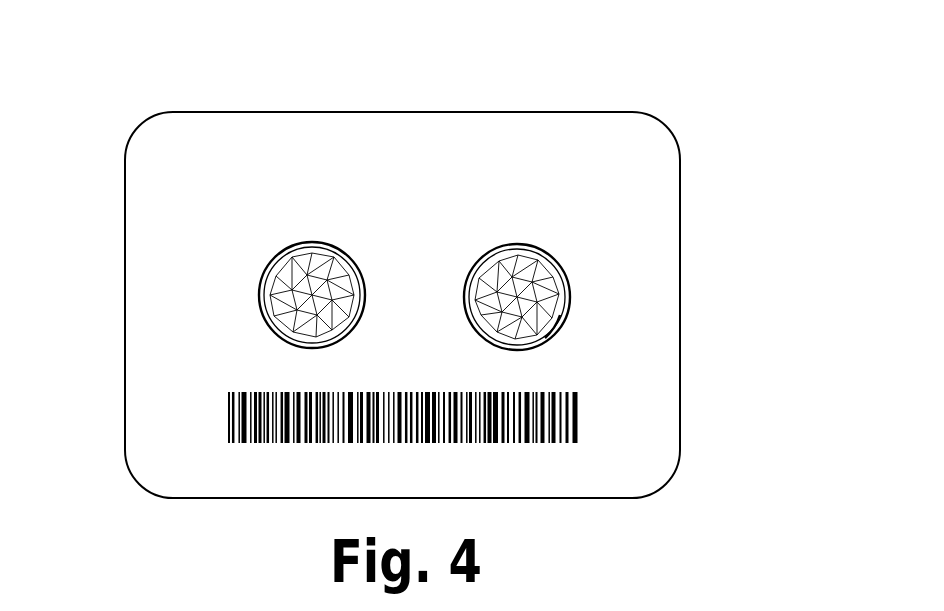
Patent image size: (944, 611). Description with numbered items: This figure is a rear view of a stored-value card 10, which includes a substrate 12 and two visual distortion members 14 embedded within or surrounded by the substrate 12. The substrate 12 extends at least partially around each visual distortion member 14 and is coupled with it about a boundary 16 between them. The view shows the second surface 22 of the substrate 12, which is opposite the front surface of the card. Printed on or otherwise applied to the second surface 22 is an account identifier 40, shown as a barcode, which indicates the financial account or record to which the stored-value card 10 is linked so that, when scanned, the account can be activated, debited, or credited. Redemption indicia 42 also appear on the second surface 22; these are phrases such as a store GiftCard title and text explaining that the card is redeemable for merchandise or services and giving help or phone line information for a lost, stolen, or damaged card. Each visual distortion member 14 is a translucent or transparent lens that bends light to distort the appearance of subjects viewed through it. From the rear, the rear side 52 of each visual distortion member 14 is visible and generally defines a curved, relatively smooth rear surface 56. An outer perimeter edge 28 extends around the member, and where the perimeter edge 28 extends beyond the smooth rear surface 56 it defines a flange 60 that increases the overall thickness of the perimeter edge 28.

The stored-value card 10 is at (441, 255).
The substrate 12 is at (641, 160).
The visual distortion member 14 is at (421, 310).
The boundary 16 is at (563, 323).
The second surface 22 is at (622, 435).
The outer perimeter edge 28 is at (125, 330).
The account identifier 40 is at (210, 417).
The redemption indicia 42 is at (150, 193).
The rear side 52 is at (513, 337).
The smooth rear surface 56 is at (548, 302).
The flange 60 is at (260, 320).